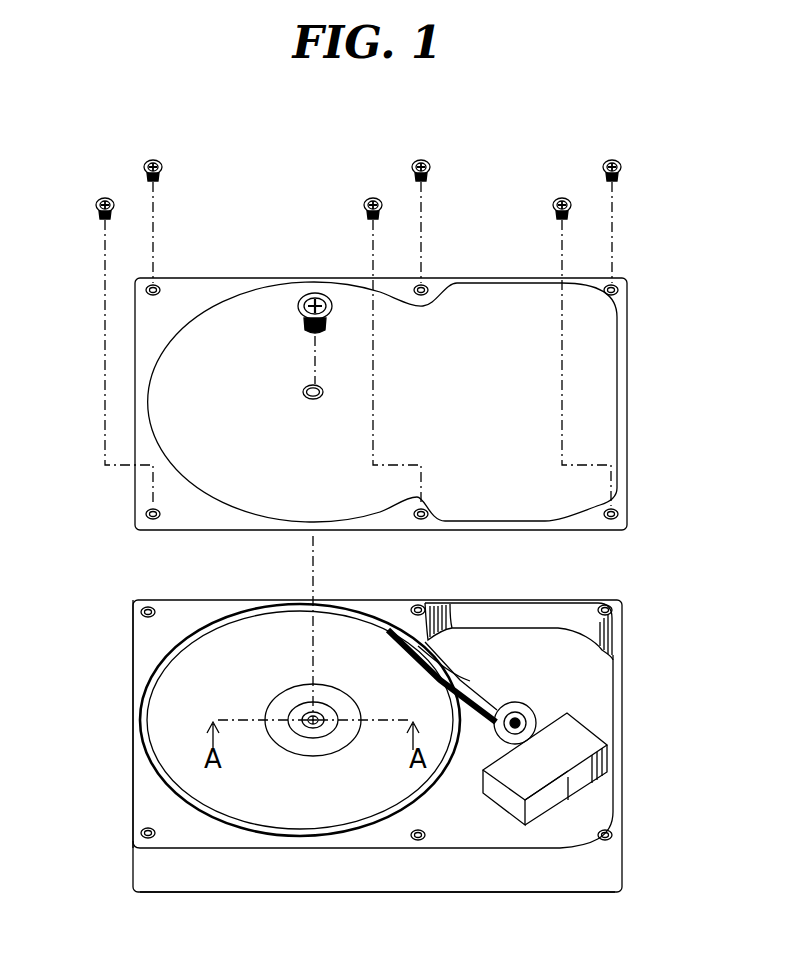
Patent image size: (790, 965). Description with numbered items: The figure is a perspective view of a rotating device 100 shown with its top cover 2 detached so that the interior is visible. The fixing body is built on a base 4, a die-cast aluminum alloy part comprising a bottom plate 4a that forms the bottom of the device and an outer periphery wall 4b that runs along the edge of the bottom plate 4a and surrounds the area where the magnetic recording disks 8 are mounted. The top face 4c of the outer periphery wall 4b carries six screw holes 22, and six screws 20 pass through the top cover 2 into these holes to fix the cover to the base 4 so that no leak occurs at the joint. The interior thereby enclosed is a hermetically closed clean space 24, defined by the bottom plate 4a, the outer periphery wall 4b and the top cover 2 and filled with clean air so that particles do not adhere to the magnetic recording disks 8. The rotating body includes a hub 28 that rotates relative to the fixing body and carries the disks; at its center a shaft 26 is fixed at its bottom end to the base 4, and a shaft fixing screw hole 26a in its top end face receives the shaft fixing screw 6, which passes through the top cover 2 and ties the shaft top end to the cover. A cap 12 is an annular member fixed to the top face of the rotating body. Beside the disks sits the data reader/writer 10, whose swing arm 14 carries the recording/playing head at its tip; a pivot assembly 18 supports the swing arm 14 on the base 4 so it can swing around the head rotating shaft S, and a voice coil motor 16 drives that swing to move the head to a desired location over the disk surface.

The top cover 2 is at (195, 296).
The base 4 is at (620, 637).
The bottom plate 4a is at (568, 696).
The outer periphery wall 4b is at (182, 612).
The top face 4c is at (236, 608).
The shaft fixing screw 6 is at (315, 298).
The magnetic recording disks 8 is at (372, 686).
The data reader/writer 10 is at (556, 727).
The cap 12 is at (297, 728).
The swing arm 14 is at (458, 683).
The voice coil motor 16 is at (547, 762).
The pivot assembly 18 is at (523, 726).
The screws 20 is at (96, 202).
The screw holes 22 is at (140, 613).
The clean space 24 is at (470, 822).
The shaft 26 is at (309, 737).
The shaft fixing screw hole 26a is at (317, 727).
The hub 28 is at (288, 702).
The head rotating shaft S is at (517, 728).
The rotating device 100 is at (247, 925).